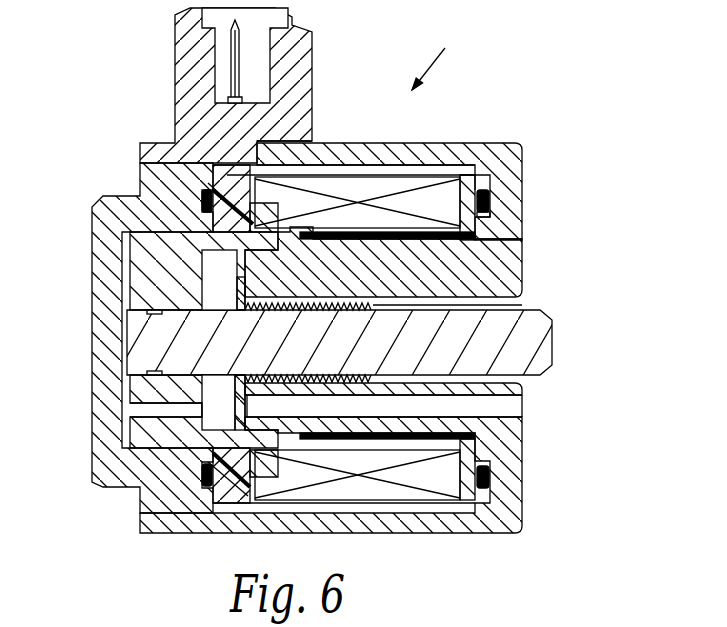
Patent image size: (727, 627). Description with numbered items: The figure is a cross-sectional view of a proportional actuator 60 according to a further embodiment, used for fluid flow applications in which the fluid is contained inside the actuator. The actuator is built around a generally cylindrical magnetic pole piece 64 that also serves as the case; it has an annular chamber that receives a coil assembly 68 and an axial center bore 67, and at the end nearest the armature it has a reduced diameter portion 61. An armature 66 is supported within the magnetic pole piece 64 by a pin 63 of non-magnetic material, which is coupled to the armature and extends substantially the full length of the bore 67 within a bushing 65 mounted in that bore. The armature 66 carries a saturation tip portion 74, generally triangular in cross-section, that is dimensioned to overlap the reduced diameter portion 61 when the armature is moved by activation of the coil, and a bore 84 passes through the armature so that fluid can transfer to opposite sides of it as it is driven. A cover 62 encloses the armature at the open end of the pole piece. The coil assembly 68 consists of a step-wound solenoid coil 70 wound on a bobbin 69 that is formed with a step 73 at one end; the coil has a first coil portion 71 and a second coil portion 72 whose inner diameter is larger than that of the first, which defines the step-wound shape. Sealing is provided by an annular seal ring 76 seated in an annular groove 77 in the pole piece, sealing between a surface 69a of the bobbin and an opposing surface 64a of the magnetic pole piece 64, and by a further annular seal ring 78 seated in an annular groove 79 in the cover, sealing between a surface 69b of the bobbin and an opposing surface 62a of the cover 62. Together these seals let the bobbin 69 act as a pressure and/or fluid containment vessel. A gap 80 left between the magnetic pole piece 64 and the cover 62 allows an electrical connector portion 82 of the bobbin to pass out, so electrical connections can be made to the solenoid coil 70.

The proportional actuator 60 is at (436, 54).
The reduced diameter portion 61 is at (278, 432).
The cover 62 is at (98, 200).
The opposing surface of the cover 62a is at (208, 535).
The pin 63 is at (540, 345).
The magnetic pole piece 64 is at (525, 273).
The opposing surface of the magnetic pole piece 64a is at (525, 239).
The bushing 65 is at (410, 353).
The armature 66 is at (153, 262).
The axial center bore 67 is at (490, 303).
The coil assembly 68 is at (450, 157).
The bobbin 69 is at (395, 163).
The surface of the bobbin 69a is at (470, 183).
The surface of the bobbin 69b is at (220, 513).
The step-wound solenoid coil 70 is at (448, 205).
The first coil portion 71 is at (435, 478).
The second coil portion 72 is at (310, 515).
The step 73 is at (288, 168).
The saturation tip portion 74 is at (218, 250).
The annular seal ring 76 is at (490, 200).
The annular groove 77 is at (492, 218).
The further annular seal ring 78 is at (200, 473).
The annular groove 79 is at (203, 465).
The gap 80 is at (262, 162).
The electrical connector portion 82 is at (177, 24).
The bore 84 is at (150, 412).